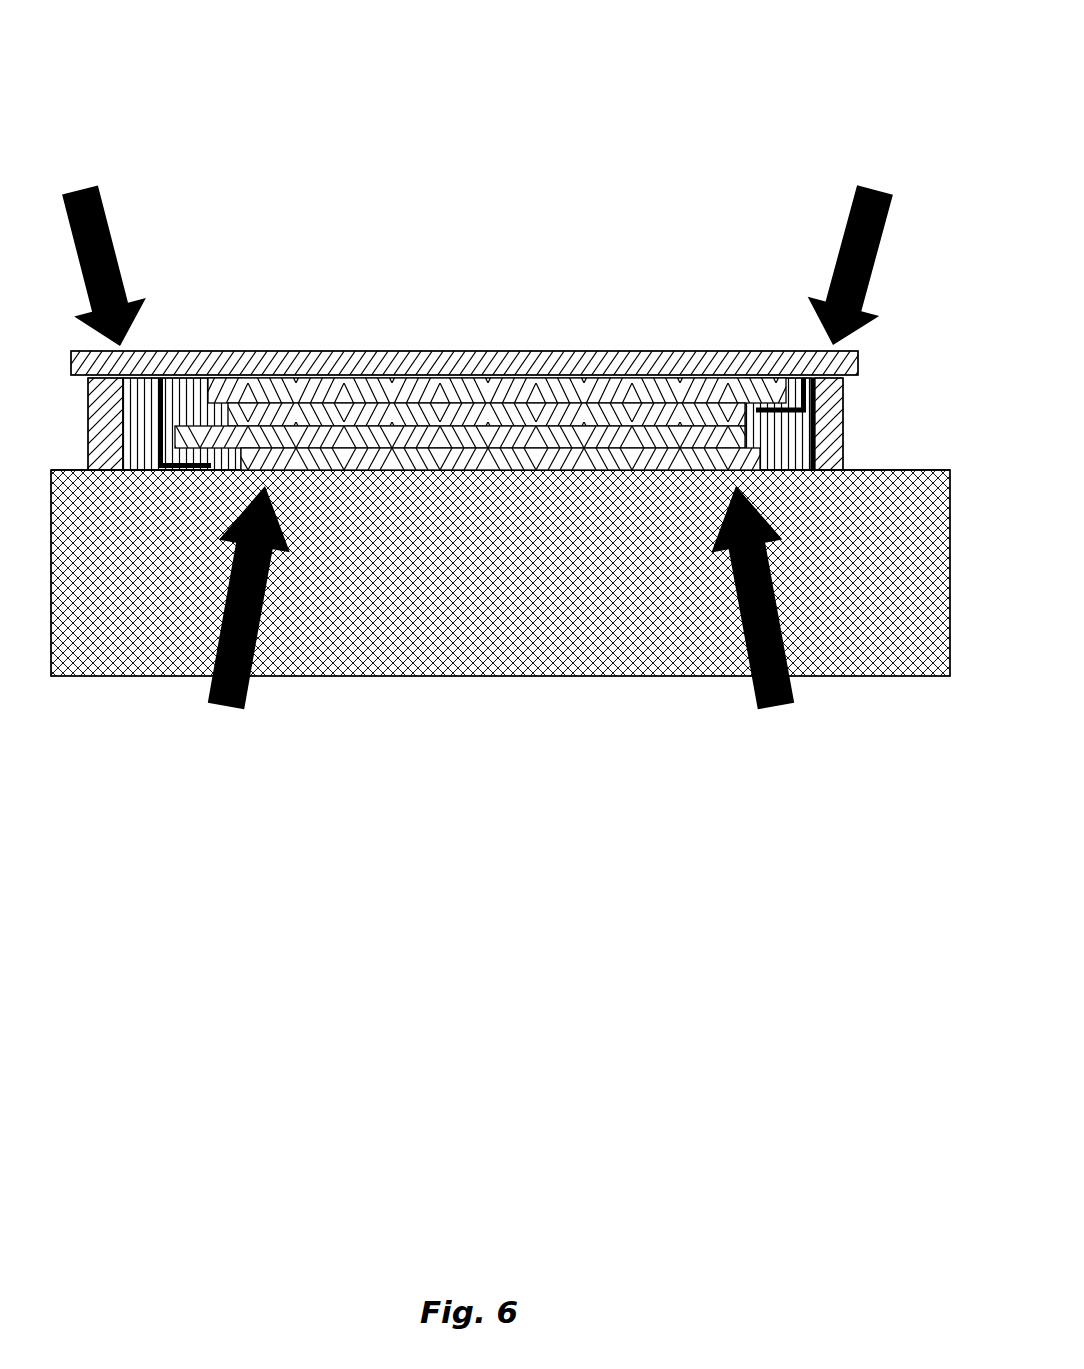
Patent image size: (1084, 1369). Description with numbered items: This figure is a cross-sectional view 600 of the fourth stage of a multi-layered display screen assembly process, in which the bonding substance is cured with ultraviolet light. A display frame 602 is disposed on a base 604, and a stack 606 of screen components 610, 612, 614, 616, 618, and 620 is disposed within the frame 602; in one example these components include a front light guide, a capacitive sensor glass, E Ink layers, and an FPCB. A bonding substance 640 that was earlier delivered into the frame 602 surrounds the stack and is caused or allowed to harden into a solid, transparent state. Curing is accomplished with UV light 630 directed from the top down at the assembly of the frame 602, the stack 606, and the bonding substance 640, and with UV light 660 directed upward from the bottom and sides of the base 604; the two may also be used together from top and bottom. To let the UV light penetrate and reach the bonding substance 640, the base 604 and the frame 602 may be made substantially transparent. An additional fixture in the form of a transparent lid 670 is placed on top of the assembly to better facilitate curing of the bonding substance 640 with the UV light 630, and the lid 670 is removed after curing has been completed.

The cross-sectional view 600 is at (625, 58).
The display frame 602 is at (835, 410).
The base 604 is at (650, 660).
The stack 606 is at (633, 465).
The screen component 610 is at (342, 450).
The screen component 612 is at (428, 423).
The screen component 614 is at (527, 405).
The screen component 616 is at (603, 383).
The screen component 618 is at (807, 392).
The screen component 620 is at (187, 462).
The UV light 630 is at (102, 200).
The bonding substance 640 is at (130, 445).
The UV light 660 is at (210, 700).
The transparent lid 670 is at (475, 340).